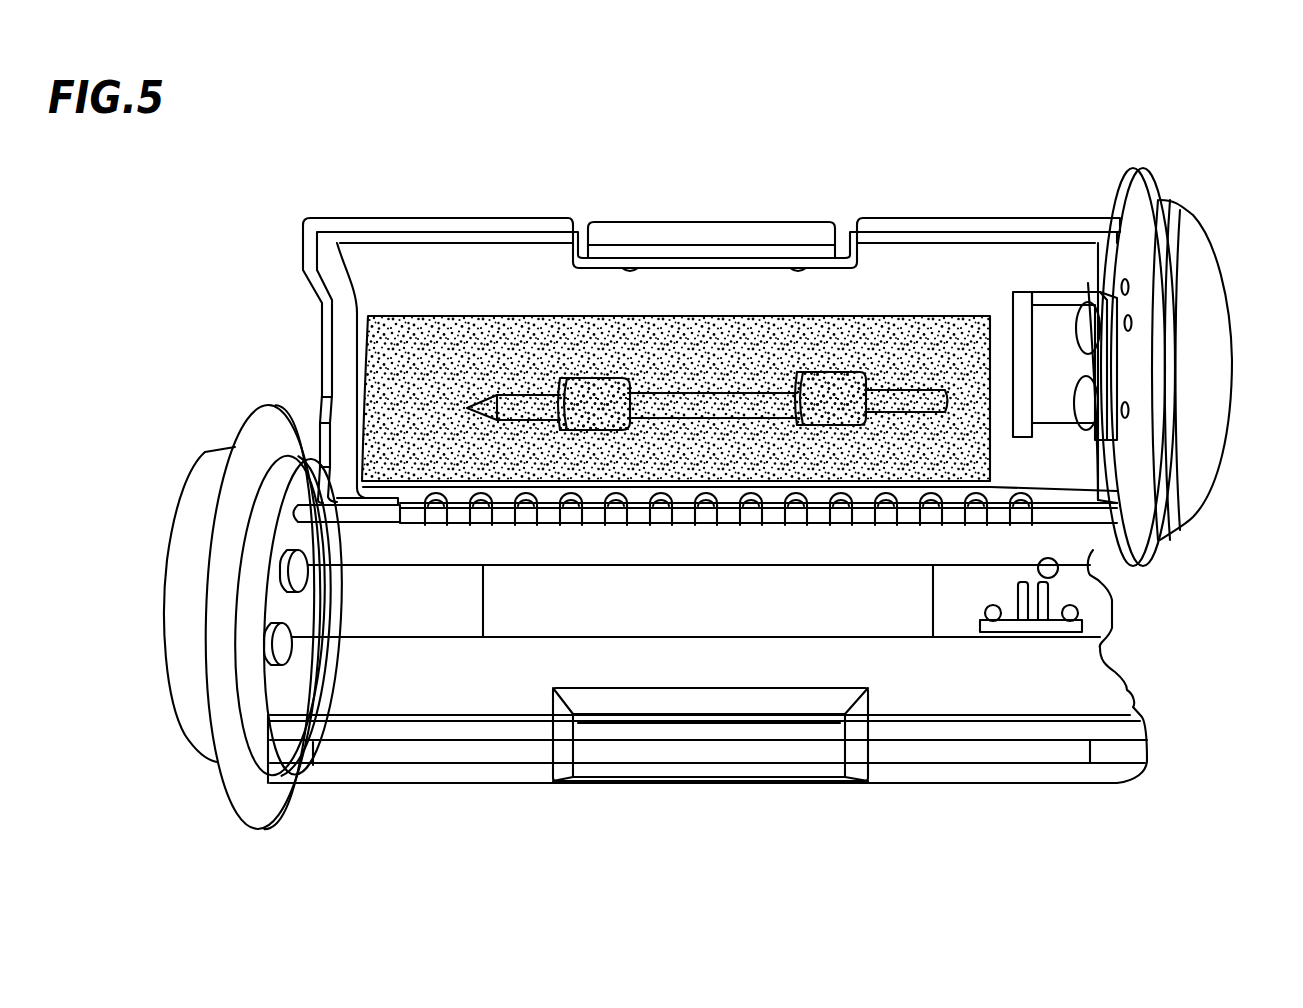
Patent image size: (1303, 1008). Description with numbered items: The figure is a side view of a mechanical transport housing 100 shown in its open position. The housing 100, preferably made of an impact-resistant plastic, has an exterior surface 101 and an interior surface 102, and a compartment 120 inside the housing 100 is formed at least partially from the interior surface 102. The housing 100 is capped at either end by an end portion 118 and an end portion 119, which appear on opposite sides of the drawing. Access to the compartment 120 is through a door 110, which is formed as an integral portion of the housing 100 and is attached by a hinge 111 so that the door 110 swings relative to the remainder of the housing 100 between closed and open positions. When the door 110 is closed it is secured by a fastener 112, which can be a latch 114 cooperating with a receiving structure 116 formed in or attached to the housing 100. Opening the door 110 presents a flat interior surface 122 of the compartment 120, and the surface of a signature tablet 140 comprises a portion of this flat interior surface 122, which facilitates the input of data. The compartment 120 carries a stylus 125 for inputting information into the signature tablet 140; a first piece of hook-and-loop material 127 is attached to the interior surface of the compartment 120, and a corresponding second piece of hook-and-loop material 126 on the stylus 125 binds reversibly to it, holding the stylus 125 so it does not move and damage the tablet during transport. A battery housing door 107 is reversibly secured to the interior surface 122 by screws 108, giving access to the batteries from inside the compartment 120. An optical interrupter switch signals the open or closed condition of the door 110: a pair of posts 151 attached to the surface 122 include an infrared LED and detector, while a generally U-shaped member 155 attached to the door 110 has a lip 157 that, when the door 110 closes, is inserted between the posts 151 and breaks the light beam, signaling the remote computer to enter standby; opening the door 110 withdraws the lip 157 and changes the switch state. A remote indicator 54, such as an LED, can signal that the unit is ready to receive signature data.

The housing 100 is at (158, 402).
The exterior surface 101 is at (1113, 653).
The interior surface 102 is at (1060, 468).
The battery housing door 107 is at (290, 496).
The screws 108 is at (303, 580).
The door 110 is at (923, 220).
The hinge 111 is at (460, 517).
The fastener 112 is at (628, 232).
The latch 114 is at (702, 232).
The receiving structure 116 is at (715, 765).
The left end cap 118 is at (170, 590).
The right end cap 119 is at (1215, 267).
The compartment 120 is at (452, 292).
The flat interior surface 122 is at (1072, 696).
The stylus 125 is at (922, 390).
The second piece of hook-and-loop material 126 is at (593, 397).
The first piece of hook-and-loop material 127 is at (391, 345).
The signature tablet 140 is at (545, 613).
The posts 151 is at (1047, 630).
The U-shaped member 155 is at (1057, 335).
The lip 157 is at (1022, 338).
The remote indicator 54 is at (1038, 563).